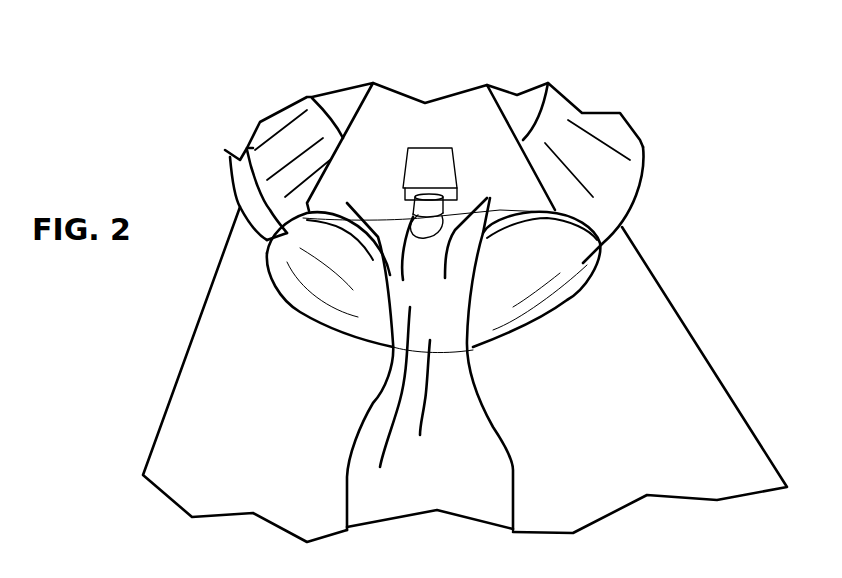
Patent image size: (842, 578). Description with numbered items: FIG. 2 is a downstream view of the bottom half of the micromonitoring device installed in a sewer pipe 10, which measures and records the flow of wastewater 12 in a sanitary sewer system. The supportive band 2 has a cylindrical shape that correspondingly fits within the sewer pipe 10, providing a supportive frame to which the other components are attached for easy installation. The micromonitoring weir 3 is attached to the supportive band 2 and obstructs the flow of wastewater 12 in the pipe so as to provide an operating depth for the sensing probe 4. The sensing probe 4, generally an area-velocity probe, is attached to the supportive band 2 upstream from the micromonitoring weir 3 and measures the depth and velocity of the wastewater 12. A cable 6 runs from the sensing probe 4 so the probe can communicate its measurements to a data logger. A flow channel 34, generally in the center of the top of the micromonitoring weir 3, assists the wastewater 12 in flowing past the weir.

The supportive band 2 is at (617, 172).
The micromonitoring weir 3 is at (297, 277).
The sensing probe 4 is at (433, 170).
The cable 6 is at (237, 173).
The sewer pipe 10 is at (527, 112).
The wastewater 12 is at (460, 433).
The flow channel 34 is at (457, 258).